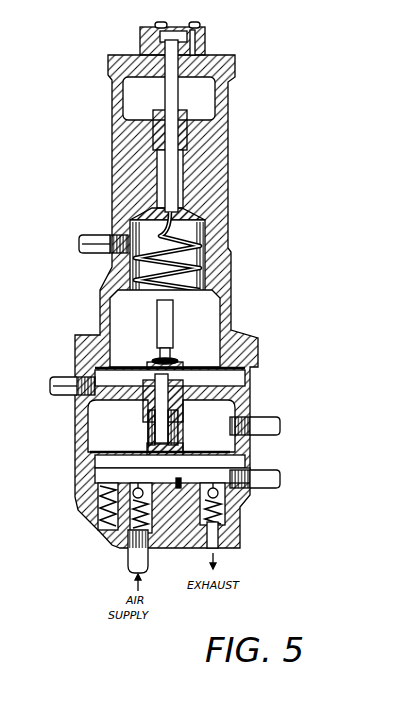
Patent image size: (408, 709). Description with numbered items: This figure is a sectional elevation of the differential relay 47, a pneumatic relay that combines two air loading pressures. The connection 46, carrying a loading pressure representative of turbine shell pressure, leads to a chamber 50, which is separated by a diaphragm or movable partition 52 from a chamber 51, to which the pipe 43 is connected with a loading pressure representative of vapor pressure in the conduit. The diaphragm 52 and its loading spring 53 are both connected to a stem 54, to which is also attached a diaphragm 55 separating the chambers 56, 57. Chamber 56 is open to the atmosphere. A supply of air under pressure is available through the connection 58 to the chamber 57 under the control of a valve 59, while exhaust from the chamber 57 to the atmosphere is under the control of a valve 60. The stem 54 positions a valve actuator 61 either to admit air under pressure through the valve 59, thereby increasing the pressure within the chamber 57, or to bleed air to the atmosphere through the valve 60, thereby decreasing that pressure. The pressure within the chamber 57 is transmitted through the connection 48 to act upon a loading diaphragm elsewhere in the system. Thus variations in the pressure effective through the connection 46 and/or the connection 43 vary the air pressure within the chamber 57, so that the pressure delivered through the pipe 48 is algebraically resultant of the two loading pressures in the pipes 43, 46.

The pipe 43 is at (70, 375).
The pipe 46 is at (95, 234).
The differential relay 47 is at (233, 122).
The pipe 48 is at (270, 470).
The chamber 50 is at (176, 332).
The chamber 51 is at (170, 383).
The diaphragm 52 is at (97, 370).
The loading spring 53 is at (207, 250).
The stem 54 is at (182, 424).
The diaphragm 55 is at (97, 455).
The chamber 56 is at (118, 426).
The chamber 57 is at (170, 465).
The connection 58 is at (128, 552).
The valve 59 is at (130, 491).
The valve 60 is at (242, 510).
The valve actuator 61 is at (95, 474).